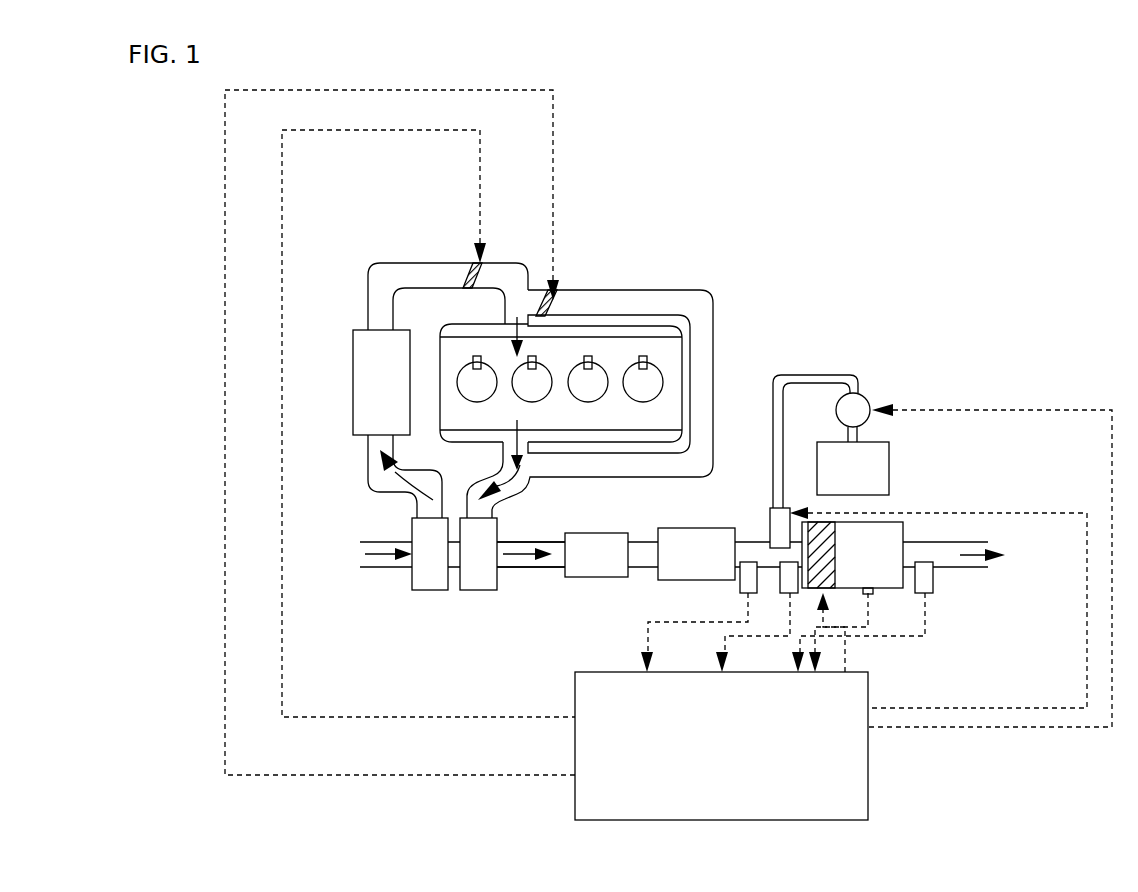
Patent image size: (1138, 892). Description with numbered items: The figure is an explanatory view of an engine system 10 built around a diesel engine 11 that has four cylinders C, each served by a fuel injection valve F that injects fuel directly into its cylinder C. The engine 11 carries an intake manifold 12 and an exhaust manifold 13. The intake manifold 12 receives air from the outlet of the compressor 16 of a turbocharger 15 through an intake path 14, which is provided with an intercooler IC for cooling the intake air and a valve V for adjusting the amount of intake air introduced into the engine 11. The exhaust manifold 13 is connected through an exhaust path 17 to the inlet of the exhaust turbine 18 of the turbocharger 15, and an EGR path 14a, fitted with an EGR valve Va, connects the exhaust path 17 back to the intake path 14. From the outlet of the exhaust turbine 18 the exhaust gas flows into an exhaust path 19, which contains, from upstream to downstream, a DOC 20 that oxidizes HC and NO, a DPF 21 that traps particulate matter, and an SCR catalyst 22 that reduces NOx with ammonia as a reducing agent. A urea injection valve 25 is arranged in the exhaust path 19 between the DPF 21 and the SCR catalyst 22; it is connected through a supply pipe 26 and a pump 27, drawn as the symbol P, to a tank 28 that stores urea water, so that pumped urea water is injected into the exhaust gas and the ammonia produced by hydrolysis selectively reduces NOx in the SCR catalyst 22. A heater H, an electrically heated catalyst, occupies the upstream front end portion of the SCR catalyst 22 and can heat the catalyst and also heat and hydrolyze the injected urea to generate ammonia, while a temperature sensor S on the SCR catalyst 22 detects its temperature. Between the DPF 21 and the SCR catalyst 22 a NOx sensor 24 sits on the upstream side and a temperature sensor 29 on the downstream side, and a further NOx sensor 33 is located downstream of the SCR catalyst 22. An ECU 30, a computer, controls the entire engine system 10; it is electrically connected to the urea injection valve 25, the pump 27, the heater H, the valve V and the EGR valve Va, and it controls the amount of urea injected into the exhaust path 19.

The engine system 10 is at (1025, 190).
The diesel engine 11 is at (557, 371).
The intake manifold 12 is at (589, 333).
The exhaust manifold 13 is at (641, 433).
The intake path 14 is at (400, 280).
The EGR path 14a is at (697, 302).
The turbocharger 15 is at (461, 611).
The compressor 16 is at (422, 582).
The exhaust path 17 is at (513, 488).
The exhaust turbine 18 is at (483, 577).
The exhaust path 19 is at (532, 570).
The DOC 20 is at (592, 560).
The DPF 21 is at (693, 545).
The SCR catalyst 22 is at (875, 573).
The NOx sensor 24 is at (737, 585).
The urea injection valve 25 is at (768, 523).
The supply pipe 26 is at (818, 374).
The pump 27 is at (872, 395).
The tank 28 is at (872, 452).
The temperature sensor 29 is at (797, 594).
The ECU 30 is at (732, 812).
The NOx sensor 33 is at (935, 595).
The intercooler IC is at (352, 376).
The valve V is at (470, 262).
The EGR valve Va is at (543, 283).
The cylinder C is at (461, 365).
The fuel injection valve F is at (475, 356).
The pump P is at (868, 393).
The heater H is at (830, 574).
The temperature sensor S is at (874, 595).